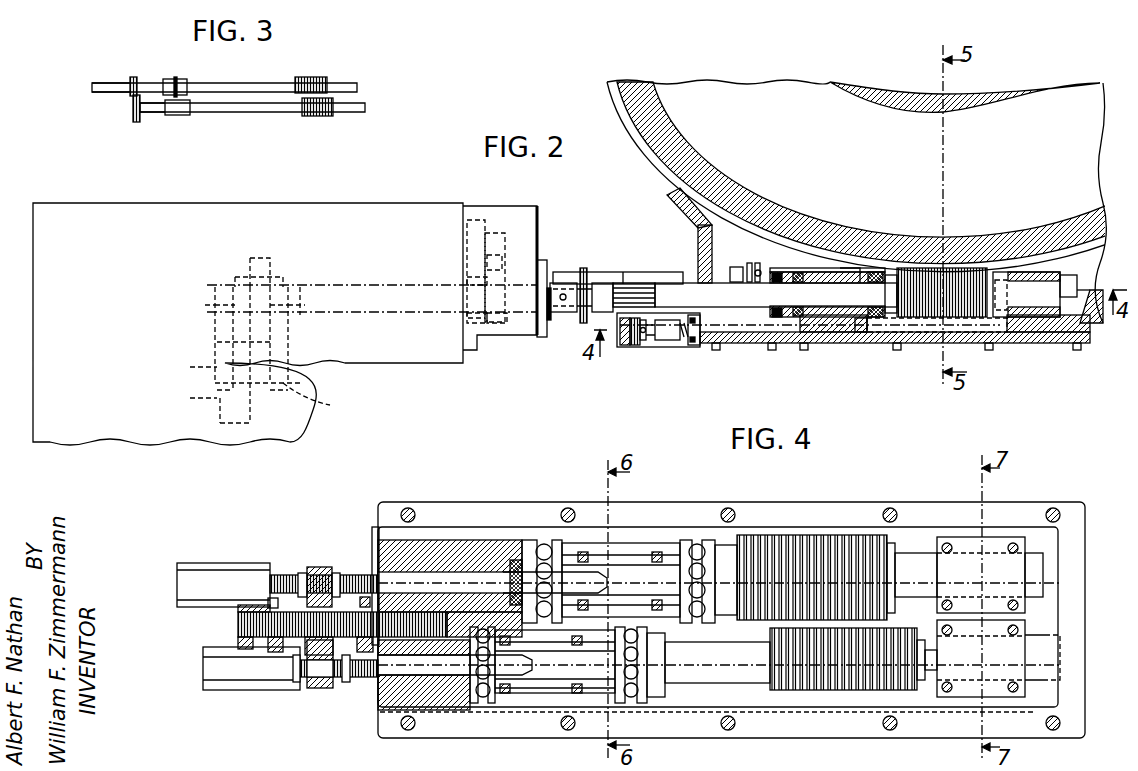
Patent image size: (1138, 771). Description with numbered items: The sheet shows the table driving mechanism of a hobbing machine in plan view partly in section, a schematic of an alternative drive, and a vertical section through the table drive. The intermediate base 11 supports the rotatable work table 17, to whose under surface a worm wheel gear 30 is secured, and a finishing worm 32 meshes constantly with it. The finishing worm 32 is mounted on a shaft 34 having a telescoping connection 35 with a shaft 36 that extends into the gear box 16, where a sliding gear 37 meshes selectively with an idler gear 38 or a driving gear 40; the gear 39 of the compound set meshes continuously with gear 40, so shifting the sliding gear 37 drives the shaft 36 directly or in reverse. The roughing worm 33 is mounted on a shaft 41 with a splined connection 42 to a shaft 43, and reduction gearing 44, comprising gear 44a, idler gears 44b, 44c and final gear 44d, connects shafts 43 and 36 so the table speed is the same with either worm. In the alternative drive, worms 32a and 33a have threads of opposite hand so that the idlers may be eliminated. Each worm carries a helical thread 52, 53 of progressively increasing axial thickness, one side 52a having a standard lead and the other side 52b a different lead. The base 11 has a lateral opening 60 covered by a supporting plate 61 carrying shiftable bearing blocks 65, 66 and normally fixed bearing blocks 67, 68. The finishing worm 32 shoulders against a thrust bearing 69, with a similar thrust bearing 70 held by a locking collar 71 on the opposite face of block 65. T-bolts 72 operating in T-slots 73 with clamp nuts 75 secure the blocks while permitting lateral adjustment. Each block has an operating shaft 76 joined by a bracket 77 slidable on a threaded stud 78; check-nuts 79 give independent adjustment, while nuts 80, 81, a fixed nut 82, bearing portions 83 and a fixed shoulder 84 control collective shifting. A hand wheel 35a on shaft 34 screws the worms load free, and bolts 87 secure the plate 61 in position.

In FIG. 2, the intermediate base 11 is at (667, 196).
In FIG. 2, the gear box 16 is at (412, 207).
In FIG. 2, the work table 17 is at (722, 83).
In FIG. 2, the worm wheel gear 30 is at (650, 163).
In FIG. 2, the finishing worm 32 is at (938, 320).
In FIG. 4, the finishing worm 32 is at (888, 540).
In FIG. 3, the finishing worm 32a is at (320, 64).
In FIG. 2, the roughing worm 33 is at (997, 320).
In FIG. 4, the roughing worm 33 is at (868, 690).
In FIG. 3, the roughing worm 33a is at (318, 116).
In FIG. 3, the finishing worm shaft 34 is at (247, 83).
In FIG. 2, the finishing worm shaft 34 is at (678, 290).
In FIG. 4, the finishing worm shaft 34 is at (195, 563).
In FIG. 3, the telescoping connection 35 is at (177, 79).
In FIG. 2, the telescoping connection 35 is at (602, 283).
In FIG. 2, the hand wheel 35a is at (585, 328).
In FIG. 3, the finishing worm drive shaft 36 is at (99, 93).
In FIG. 2, the finishing worm drive shaft 36 is at (382, 285).
In FIG. 2, the sliding gear 37 is at (258, 258).
In FIG. 2, the idler gear 38 is at (325, 405).
In FIG. 2, the gear 39 is at (222, 398).
In FIG. 2, the driving gear 40 is at (233, 425).
In FIG. 3, the roughing worm shaft 41 is at (258, 113).
In FIG. 2, the roughing worm shaft 41 is at (668, 270).
In FIG. 4, the roughing worm shaft 41 is at (210, 690).
In FIG. 3, the splined connection 42 is at (180, 115).
In FIG. 2, the splined connection 42 is at (592, 275).
In FIG. 3, the roughing worm drive shaft 43 is at (155, 113).
In FIG. 2, the roughing worm drive shaft 43 is at (520, 280).
In FIG. 2, the reduction gearing 44 is at (517, 277).
In FIG. 3, the gear 44a is at (134, 77).
In FIG. 2, the gear 44a is at (477, 320).
In FIG. 2, the idler gear 44b is at (477, 220).
In FIG. 2, the idler gear 44c is at (500, 233).
In FIG. 3, the final gear 44d is at (135, 122).
In FIG. 2, the final gear 44d is at (497, 322).
In FIG. 4, the helical thread 52 is at (850, 553).
In FIG. 4, the thread side 52a is at (855, 553).
In FIG. 4, the thread side 52b is at (838, 556).
In FIG. 4, the helical thread 53 is at (833, 690).
In FIG. 2, the lateral opening 60 is at (1080, 305).
In FIG. 4, the lateral opening 60 is at (692, 707).
In FIG. 2, the supporting plate 61 is at (1040, 348).
In FIG. 4, the supporting plate 61 is at (448, 545).
In FIG. 2, the shiftable bearing block 65 is at (848, 272).
In FIG. 4, the shiftable bearing block 65 is at (620, 543).
In FIG. 2, the shiftable bearing block 66 is at (818, 270).
In FIG. 4, the shiftable bearing block 66 is at (557, 695).
In FIG. 2, the fixed bearing block 67 is at (1010, 272).
In FIG. 4, the fixed bearing block 67 is at (998, 543).
In FIG. 2, the fixed bearing block 68 is at (1040, 272).
In FIG. 4, the fixed bearing block 68 is at (1005, 697).
In FIG. 2, the thrust bearing 69 is at (875, 272).
In FIG. 4, the thrust bearing 69 is at (708, 540).
In FIG. 2, the thrust bearing 70 is at (797, 272).
In FIG. 4, the thrust bearing 70 is at (534, 540).
In FIG. 2, the locking collar 71 is at (775, 272).
In FIG. 4, the locking collar 71 is at (515, 540).
In FIG. 2, the T-bolt 72 is at (865, 352).
In FIG. 4, the T-bolt 72 is at (583, 553).
In FIG. 4, the T-slot 73 is at (527, 692).
In FIG. 2, the clamp nut 75 is at (857, 350).
In FIG. 2, the operating shaft 76 is at (748, 350).
In FIG. 4, the operating shaft 76 is at (422, 580).
In FIG. 2, the bracket 77 is at (667, 348).
In FIG. 4, the bracket 77 is at (315, 567).
In FIG. 2, the threaded stud 78 is at (632, 348).
In FIG. 4, the threaded stud 78 is at (238, 623).
In FIG. 4, the check-nut 79 is at (302, 573).
In FIG. 2, the nut 80 is at (643, 348).
In FIG. 4, the nut 80 is at (270, 598).
In FIG. 2, the nut 81 is at (690, 350).
In FIG. 4, the nut 81 is at (365, 597).
In FIG. 2, the nut 82 is at (620, 348).
In FIG. 4, the nut 82 is at (248, 650).
In FIG. 4, the bearing portion 83 is at (297, 655).
In FIG. 4, the fixed shoulder 84 is at (376, 540).
In FIG. 2, the bolt 87 is at (1075, 350).
In FIG. 4, the bolt 87 is at (1053, 510).